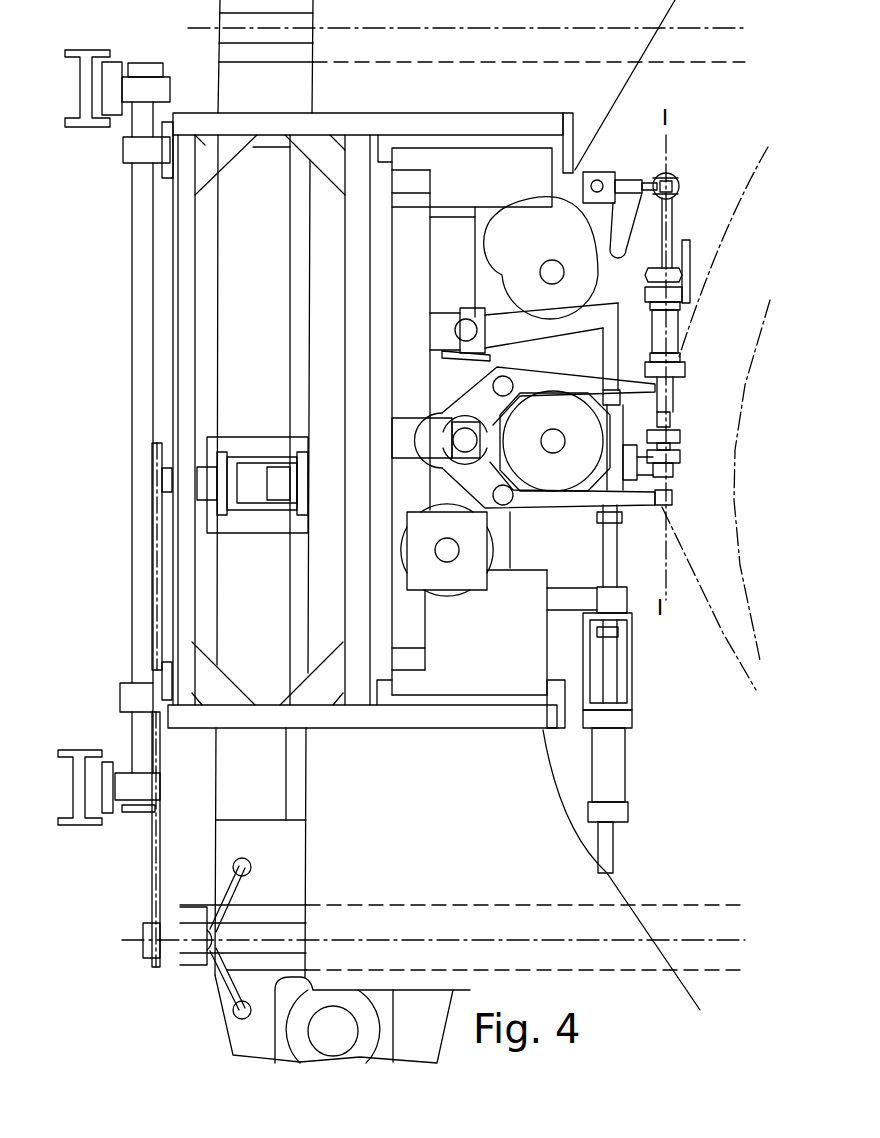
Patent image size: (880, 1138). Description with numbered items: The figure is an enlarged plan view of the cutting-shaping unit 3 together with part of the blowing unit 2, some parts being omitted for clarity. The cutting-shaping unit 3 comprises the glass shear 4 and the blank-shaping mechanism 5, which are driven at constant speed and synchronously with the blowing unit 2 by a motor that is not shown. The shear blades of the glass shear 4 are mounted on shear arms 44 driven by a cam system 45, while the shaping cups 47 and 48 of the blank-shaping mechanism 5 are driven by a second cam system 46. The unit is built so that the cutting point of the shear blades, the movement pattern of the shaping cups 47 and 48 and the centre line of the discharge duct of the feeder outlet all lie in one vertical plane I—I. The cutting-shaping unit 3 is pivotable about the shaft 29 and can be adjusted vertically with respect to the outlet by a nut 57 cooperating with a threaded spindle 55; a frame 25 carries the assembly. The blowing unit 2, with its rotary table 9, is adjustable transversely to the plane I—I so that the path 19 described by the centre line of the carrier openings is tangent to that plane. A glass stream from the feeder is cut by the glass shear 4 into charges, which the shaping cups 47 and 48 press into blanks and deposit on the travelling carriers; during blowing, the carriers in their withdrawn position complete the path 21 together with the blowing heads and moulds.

The blowing unit 2 is at (503, 875).
The cutting-shaping unit 3 is at (423, 773).
The glass shear 4 is at (445, 400).
The blank-shaping mechanism 5 is at (696, 322).
The rotary table 9 is at (610, 882).
The path 19 is at (732, 206).
The path 21 is at (732, 386).
The frame 25 is at (362, 124).
The shaft 29 is at (135, 256).
The shear arms 44 is at (540, 500).
The cam system 45 is at (571, 478).
The second cam system 46 is at (580, 277).
The shaping cup 47 is at (680, 435).
The shaping cup 48 is at (680, 459).
The threaded spindle 55 is at (452, 552).
The nut 57 is at (447, 584).